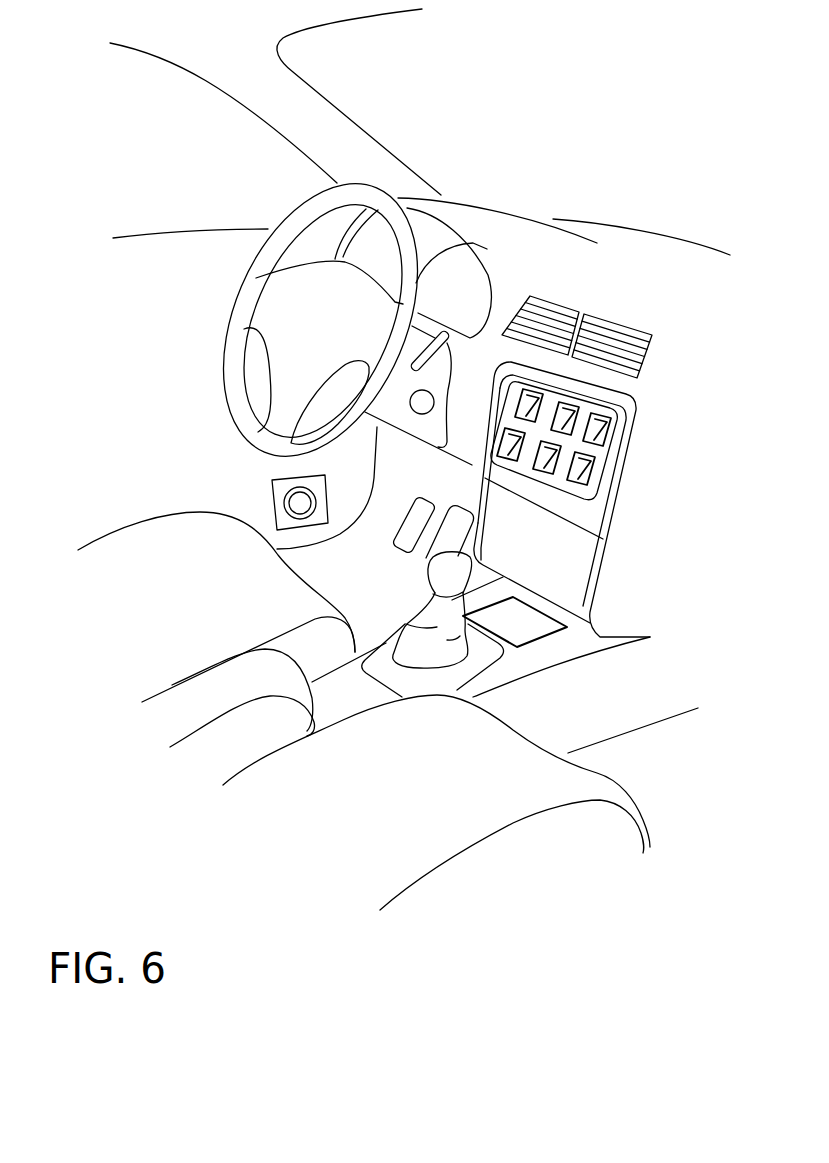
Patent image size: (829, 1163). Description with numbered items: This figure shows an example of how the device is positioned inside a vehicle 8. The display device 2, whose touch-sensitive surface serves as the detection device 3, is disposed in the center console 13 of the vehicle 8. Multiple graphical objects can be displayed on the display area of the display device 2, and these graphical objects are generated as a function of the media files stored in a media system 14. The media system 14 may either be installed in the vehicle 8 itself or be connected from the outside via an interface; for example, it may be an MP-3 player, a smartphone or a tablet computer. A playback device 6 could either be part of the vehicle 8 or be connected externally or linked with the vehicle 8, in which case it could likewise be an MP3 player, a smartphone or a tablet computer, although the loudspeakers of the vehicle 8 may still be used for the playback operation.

The vehicle 8 is at (687, 83).
The display device 2 is at (590, 458).
The detection device 3 is at (588, 493).
The center console 13 is at (626, 446).
The playback device 6 is at (273, 493).
The media system 14 is at (497, 632).